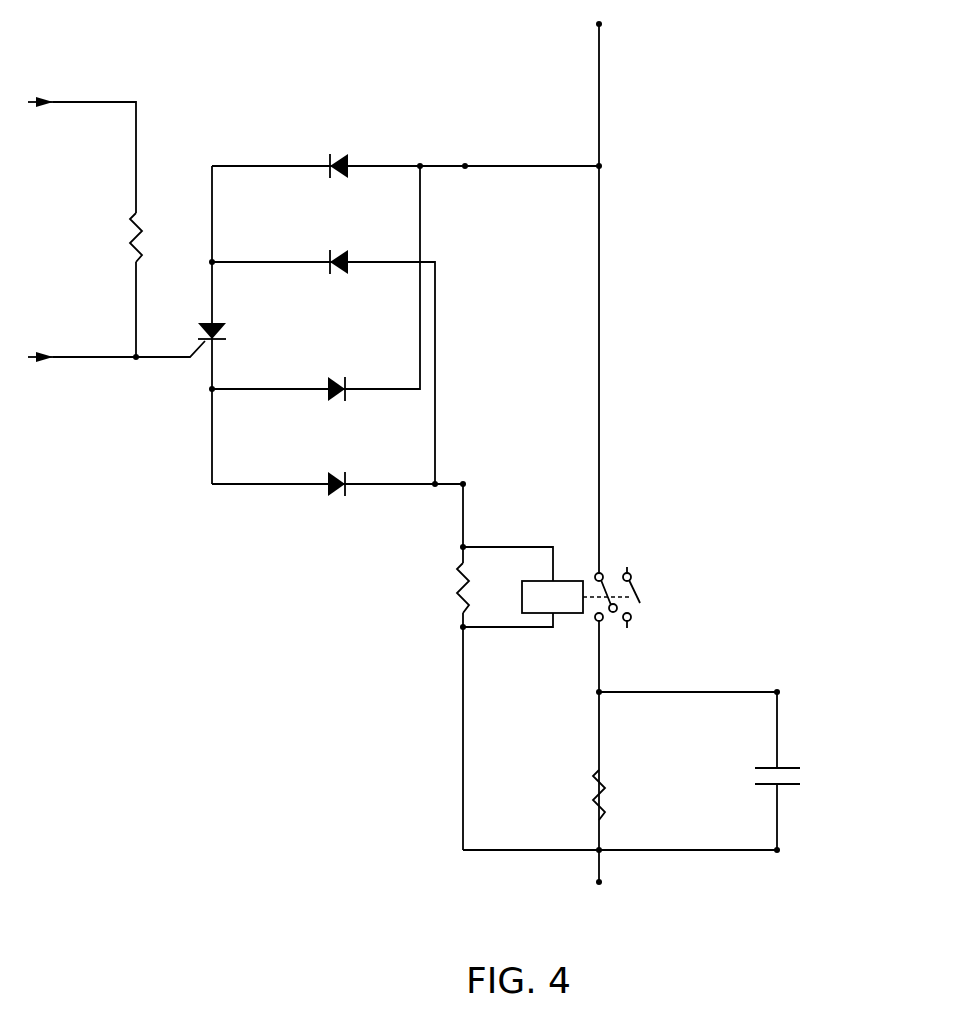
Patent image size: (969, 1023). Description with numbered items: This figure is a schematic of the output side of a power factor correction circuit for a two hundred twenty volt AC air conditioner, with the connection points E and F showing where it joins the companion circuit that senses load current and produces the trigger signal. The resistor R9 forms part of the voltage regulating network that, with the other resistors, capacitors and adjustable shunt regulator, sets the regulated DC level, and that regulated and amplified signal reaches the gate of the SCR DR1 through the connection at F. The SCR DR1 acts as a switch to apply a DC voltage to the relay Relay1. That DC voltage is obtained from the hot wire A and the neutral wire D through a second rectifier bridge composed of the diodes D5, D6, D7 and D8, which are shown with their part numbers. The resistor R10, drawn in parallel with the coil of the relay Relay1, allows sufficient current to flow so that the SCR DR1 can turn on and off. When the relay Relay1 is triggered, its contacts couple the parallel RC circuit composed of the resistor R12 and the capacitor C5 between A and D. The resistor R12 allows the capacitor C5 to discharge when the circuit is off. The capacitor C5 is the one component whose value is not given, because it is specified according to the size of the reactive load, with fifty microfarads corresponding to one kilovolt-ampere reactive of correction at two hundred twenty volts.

The hot wire connection A is at (581, 297).
The neutral wire connection D is at (632, 871).
The inter-figure connection E is at (82, 155).
The inter-figure connection F is at (116, 375).
The resistor R9 is at (162, 285).
The SCR DR1 is at (223, 325).
The diode D5 is at (407, 150).
The diode D6 is at (323, 351).
The diode D7 is at (316, 283).
The diode D8 is at (339, 468).
The resistor R10 is at (436, 667).
The relay Relay1 is at (551, 698).
The resistor R12 is at (571, 771).
The capacitor C5 is at (803, 776).